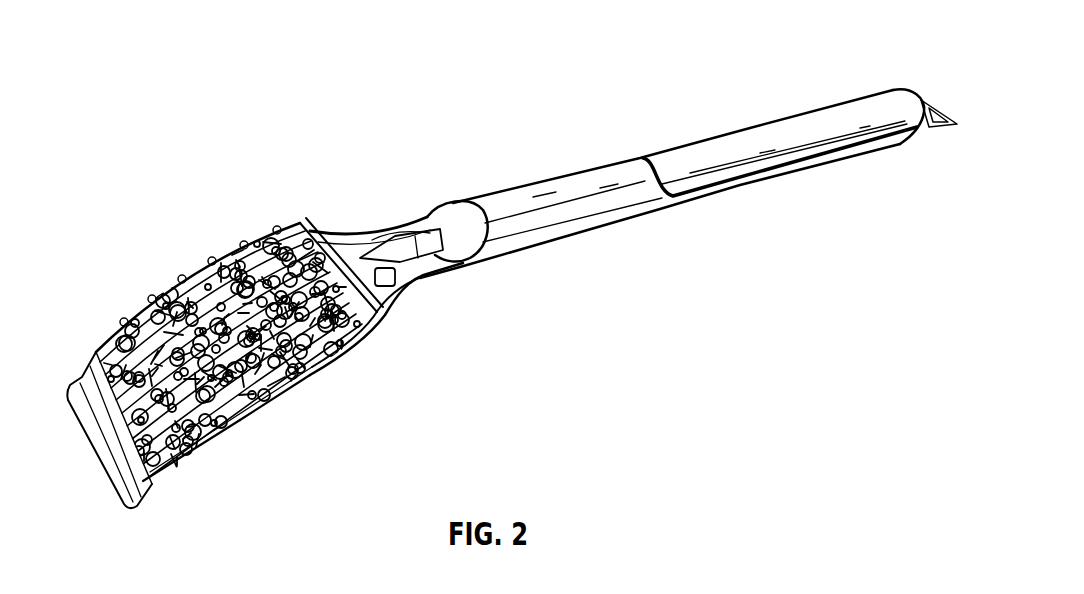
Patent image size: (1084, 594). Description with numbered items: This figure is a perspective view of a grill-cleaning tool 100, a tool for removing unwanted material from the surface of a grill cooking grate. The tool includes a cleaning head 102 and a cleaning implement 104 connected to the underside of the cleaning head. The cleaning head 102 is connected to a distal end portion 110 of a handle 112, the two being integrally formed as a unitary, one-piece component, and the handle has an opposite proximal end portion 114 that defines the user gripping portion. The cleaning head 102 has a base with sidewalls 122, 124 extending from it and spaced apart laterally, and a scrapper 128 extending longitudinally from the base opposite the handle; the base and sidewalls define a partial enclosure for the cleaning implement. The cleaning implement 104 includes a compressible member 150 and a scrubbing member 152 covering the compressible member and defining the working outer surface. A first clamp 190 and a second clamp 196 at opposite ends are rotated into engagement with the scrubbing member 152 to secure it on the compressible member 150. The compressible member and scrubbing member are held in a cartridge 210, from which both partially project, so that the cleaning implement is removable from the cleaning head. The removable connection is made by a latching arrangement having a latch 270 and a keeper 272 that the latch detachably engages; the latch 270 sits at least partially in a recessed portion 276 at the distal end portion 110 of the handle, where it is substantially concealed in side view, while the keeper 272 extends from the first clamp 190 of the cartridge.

The grill-cleaning tool 100 is at (188, 48).
The cleaning head 102 is at (350, 364).
The cleaning implement 104 is at (270, 410).
The distal end portion 110 is at (460, 265).
The handle 112 is at (640, 212).
The proximal end portion 114 is at (885, 147).
The sidewall 122 is at (285, 226).
The sidewall 124 is at (340, 388).
The scrapper 128 is at (104, 488).
The compressible member 150 is at (227, 430).
The scrubbing member 152 is at (173, 282).
The first clamp 190 is at (320, 222).
The second clamp 196 is at (117, 407).
The cartridge 210 is at (313, 377).
The latch 270 is at (403, 247).
The keeper 272 is at (392, 297).
The recessed portion 276 is at (460, 220).